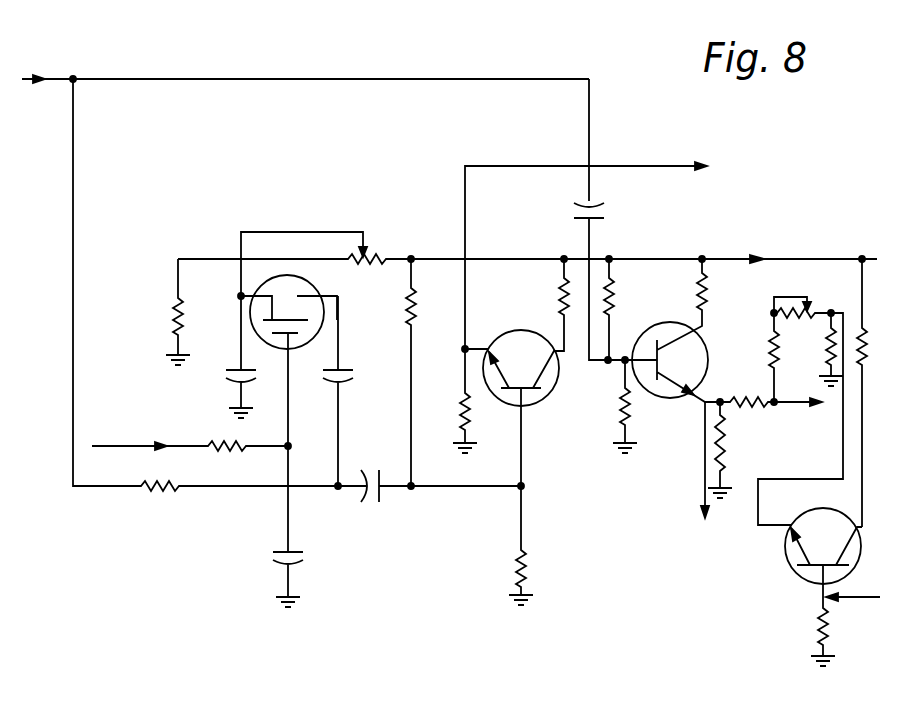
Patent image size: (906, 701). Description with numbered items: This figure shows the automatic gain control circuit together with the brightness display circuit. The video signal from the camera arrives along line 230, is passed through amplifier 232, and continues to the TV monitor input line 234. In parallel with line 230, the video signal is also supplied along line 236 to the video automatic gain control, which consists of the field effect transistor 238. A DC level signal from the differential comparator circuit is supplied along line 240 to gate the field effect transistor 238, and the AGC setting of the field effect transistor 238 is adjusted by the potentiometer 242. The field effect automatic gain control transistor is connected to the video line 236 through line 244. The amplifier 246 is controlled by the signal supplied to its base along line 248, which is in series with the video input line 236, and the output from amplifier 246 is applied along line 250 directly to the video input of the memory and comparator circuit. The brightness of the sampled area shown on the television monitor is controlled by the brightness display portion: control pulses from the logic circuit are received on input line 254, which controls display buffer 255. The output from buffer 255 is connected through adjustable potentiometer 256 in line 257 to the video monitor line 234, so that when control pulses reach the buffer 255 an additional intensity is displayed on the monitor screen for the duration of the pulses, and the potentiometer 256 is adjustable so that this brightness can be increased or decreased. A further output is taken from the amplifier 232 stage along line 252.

The line 230 is at (57, 78).
The line 236 is at (73, 136).
The field effect transistor 238 is at (322, 291).
The line 240 is at (125, 445).
The potentiometer 242 is at (377, 253).
The line 244 is at (338, 433).
The amplifier 246 is at (534, 318).
The line 248 is at (524, 456).
The line 250 is at (661, 169).
The amplifier 232 is at (646, 326).
The output line 252 is at (705, 472).
The TV monitor input line 234 is at (789, 409).
The potentiometer 256 is at (785, 296).
The line 257 is at (770, 342).
The display buffer 255 is at (786, 558).
The input line 254 is at (862, 600).